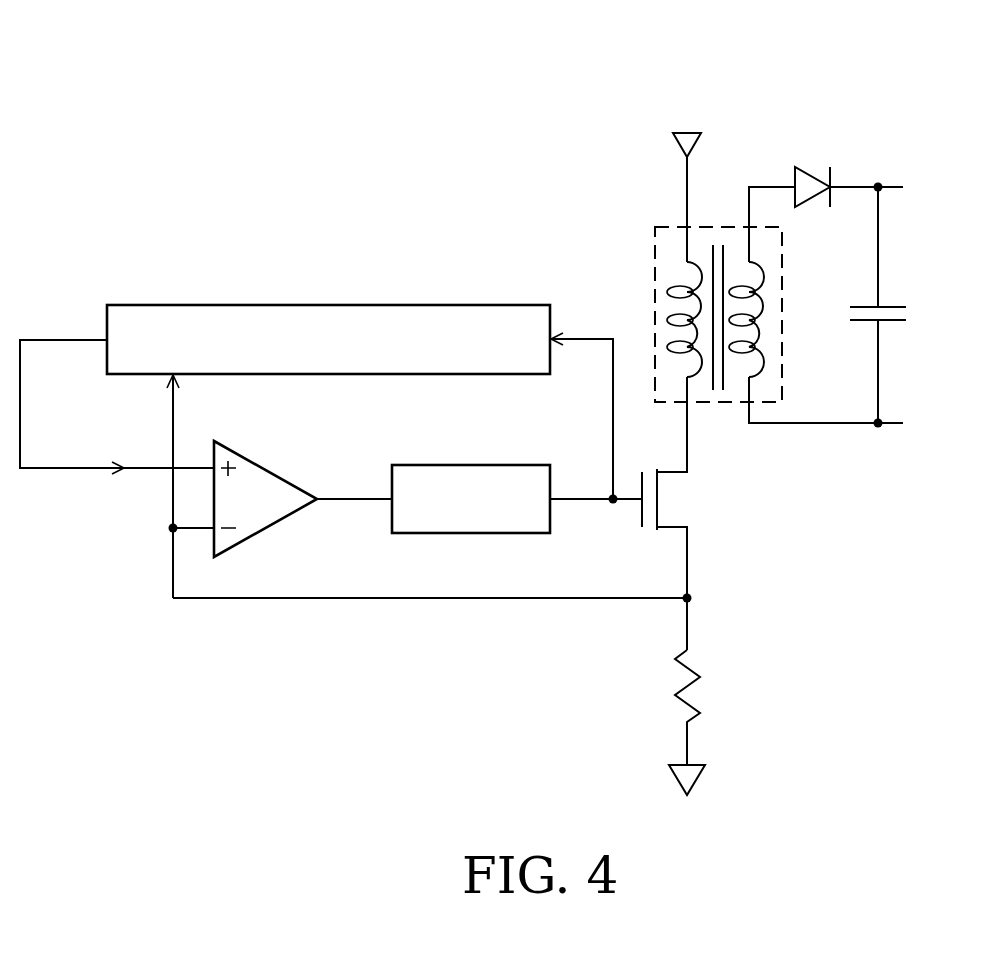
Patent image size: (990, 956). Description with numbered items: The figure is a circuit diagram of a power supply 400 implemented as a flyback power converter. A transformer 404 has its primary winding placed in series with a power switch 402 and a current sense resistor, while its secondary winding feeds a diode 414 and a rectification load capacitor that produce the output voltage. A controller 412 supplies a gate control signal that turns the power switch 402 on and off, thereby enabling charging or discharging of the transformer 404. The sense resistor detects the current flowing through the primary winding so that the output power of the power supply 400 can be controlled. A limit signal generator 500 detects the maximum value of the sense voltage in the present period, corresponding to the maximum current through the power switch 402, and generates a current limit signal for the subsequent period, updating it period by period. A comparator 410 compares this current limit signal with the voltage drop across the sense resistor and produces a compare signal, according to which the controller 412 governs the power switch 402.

The power supply 400 is at (350, 92).
The limit signal generator 500 is at (330, 303).
The comparator 410 is at (281, 521).
The controller 412 is at (449, 535).
The power switch 402 is at (690, 499).
The transformer 404 is at (655, 238).
The diode 414 is at (804, 166).